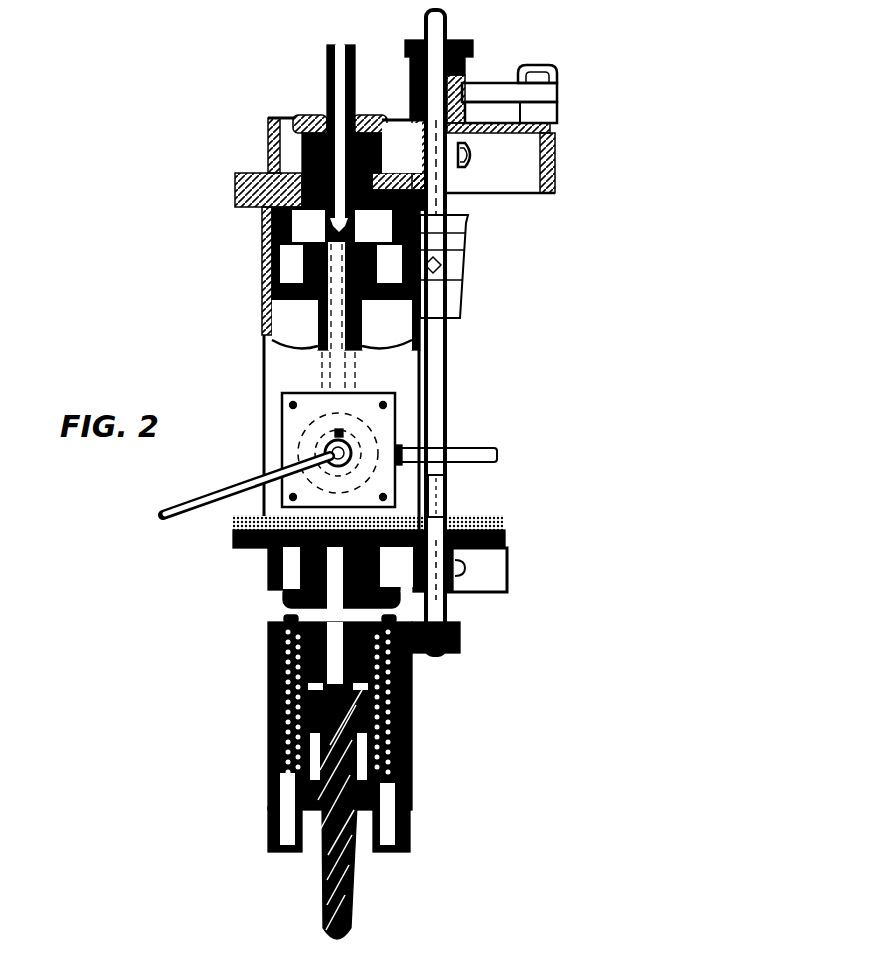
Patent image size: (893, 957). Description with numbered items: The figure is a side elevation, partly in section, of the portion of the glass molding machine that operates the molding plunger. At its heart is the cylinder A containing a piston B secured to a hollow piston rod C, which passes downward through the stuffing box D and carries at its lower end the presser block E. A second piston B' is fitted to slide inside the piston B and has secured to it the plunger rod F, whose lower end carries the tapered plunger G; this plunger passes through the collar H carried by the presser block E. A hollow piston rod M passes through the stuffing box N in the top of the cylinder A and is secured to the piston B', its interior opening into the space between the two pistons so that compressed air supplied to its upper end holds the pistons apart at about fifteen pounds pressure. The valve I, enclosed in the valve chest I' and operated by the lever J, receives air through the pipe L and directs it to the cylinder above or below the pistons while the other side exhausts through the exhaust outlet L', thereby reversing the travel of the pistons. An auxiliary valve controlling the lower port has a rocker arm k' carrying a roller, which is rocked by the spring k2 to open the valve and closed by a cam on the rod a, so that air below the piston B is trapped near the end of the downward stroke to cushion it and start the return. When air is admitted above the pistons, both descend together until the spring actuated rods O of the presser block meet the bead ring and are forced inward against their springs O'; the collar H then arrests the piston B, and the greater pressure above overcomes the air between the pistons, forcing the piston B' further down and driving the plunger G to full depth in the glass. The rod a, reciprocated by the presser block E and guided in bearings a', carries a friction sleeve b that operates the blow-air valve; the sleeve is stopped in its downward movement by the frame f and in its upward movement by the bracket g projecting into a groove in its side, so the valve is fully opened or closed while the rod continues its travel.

The cylinder A is at (250, 414).
The hollow piston rod M is at (327, 76).
The stuffing box N is at (306, 116).
The frame f is at (404, 146).
The bracket g is at (497, 86).
The friction sleeve b is at (509, 101).
The bearings a' is at (470, 170).
The rod a is at (447, 331).
The second piston B' is at (341, 246).
The piston B is at (295, 325).
The hollow piston rod C is at (387, 328).
The plunger rod F is at (338, 476).
The spring k2 is at (449, 296).
The valve chest I' is at (338, 441).
The valve I is at (338, 448).
The exhaust outlet L' is at (299, 453).
The pipe L is at (456, 458).
The lever J is at (246, 485).
The rocker arm k' is at (450, 496).
The stuffing box D is at (396, 567).
The presser block E is at (268, 643).
The springs O' is at (343, 702).
The collar H is at (284, 825).
The spring actuated rods O is at (337, 832).
The tapered plunger G is at (346, 814).